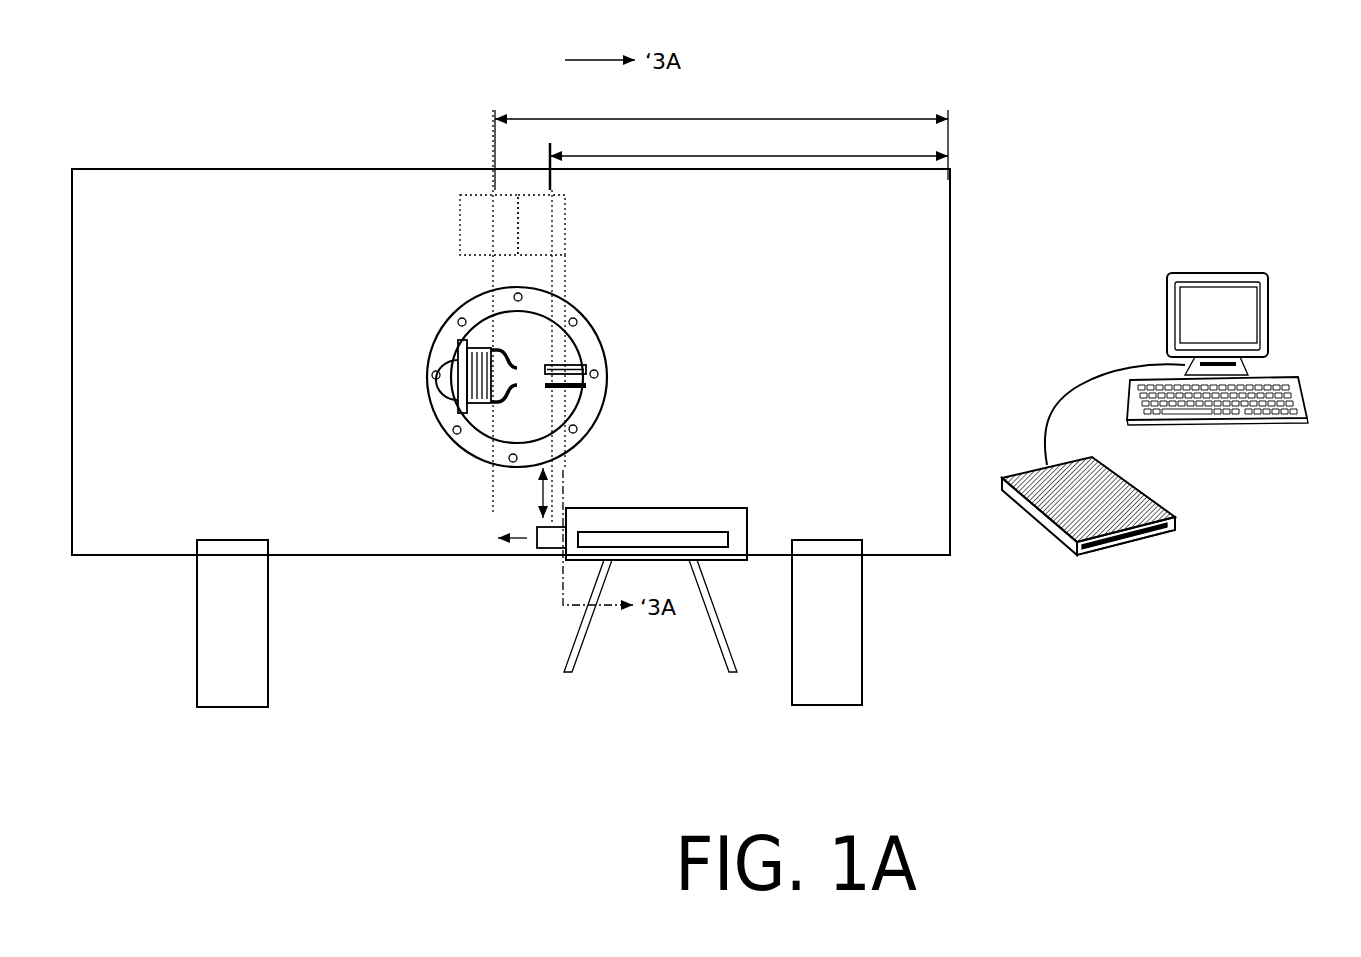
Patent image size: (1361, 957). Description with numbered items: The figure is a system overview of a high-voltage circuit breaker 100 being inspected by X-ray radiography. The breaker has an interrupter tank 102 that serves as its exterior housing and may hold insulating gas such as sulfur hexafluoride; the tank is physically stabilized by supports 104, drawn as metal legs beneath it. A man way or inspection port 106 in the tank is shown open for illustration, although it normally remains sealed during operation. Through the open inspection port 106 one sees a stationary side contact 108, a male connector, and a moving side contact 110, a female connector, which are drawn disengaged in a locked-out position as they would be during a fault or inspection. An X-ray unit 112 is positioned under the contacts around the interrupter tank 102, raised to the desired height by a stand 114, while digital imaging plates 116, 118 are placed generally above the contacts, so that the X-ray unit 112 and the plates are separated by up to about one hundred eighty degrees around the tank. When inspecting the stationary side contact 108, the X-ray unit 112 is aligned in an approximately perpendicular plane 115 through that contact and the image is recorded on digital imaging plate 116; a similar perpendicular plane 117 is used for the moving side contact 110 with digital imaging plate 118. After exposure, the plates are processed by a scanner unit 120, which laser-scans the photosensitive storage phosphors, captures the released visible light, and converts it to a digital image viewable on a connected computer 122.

The high-voltage circuit breaker 100 is at (203, 365).
The interrupter tank 102 is at (238, 208).
The supports 104 is at (220, 662).
The inspection port 106 is at (565, 408).
The stationary side contact 108 is at (583, 368).
The moving side contact 110 is at (457, 365).
The X-ray unit 112 is at (551, 550).
The stand 114 is at (718, 635).
The perpendicular plane 115 is at (550, 490).
The digital imaging plate 116 is at (565, 224).
The perpendicular plane 117 is at (493, 487).
The digital imaging plate 118 is at (470, 224).
The scanner unit 120 is at (1130, 548).
The computer 122 is at (1270, 322).